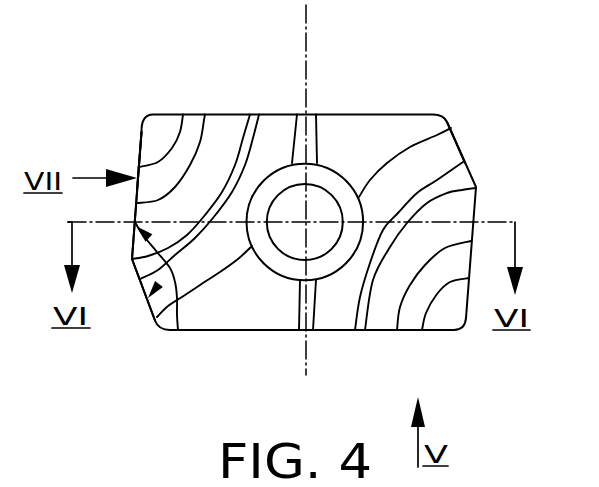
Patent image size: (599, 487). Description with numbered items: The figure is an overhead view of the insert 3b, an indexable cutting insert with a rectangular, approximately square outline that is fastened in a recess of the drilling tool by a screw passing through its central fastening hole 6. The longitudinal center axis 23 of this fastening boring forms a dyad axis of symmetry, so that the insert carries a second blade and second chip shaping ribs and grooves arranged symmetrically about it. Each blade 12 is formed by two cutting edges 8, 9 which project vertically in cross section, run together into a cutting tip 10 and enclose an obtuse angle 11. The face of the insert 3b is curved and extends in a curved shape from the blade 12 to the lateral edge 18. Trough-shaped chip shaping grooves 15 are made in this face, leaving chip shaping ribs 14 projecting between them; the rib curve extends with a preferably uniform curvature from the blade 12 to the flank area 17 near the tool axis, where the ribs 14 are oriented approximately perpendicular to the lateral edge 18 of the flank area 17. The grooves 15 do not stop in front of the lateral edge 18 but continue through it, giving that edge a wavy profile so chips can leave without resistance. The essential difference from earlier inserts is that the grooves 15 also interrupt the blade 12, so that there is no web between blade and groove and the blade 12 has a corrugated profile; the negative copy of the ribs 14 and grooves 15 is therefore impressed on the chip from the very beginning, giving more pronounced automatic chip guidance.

The insert 3b is at (500, 142).
The central fastening hole 6 is at (328, 202).
The cutting edge 8 is at (142, 133).
The cutting edge 9 is at (147, 308).
The cutting tip 10 is at (132, 259).
The obtuse angle 11 is at (178, 330).
The blade 12 is at (120, 150).
The chip shaping ribs 14 is at (178, 155).
The chip shaping grooves 15 is at (225, 137).
The flank area 17 is at (277, 114).
The lateral edge 18 is at (415, 114).
The longitudinal center axis 23 is at (308, 200).